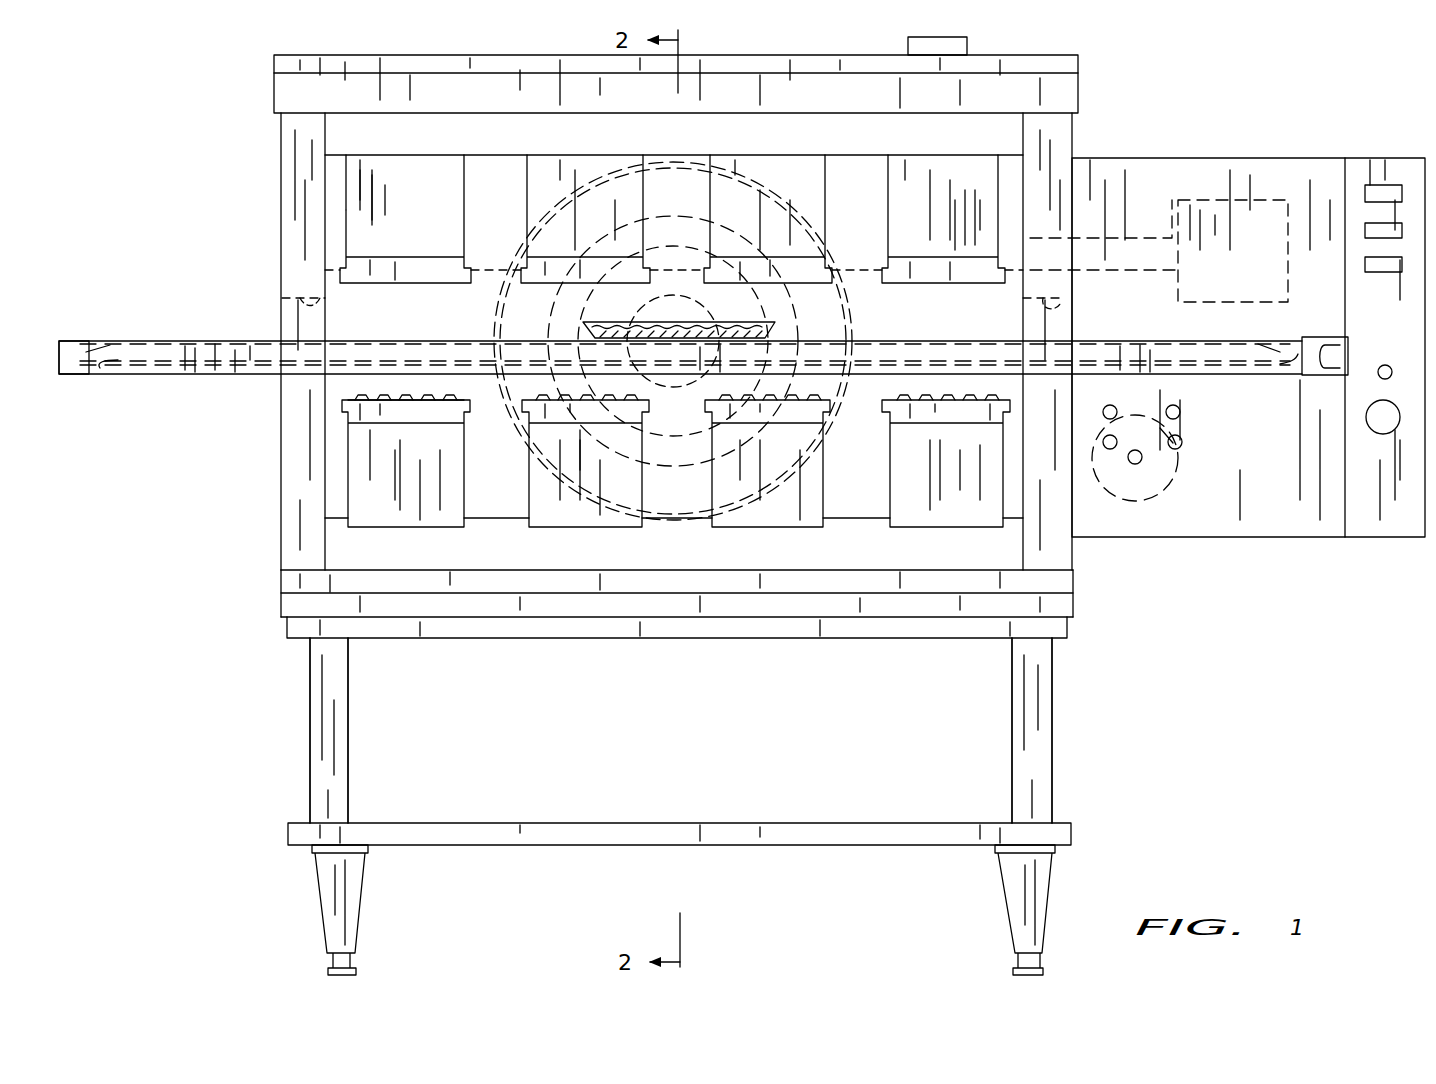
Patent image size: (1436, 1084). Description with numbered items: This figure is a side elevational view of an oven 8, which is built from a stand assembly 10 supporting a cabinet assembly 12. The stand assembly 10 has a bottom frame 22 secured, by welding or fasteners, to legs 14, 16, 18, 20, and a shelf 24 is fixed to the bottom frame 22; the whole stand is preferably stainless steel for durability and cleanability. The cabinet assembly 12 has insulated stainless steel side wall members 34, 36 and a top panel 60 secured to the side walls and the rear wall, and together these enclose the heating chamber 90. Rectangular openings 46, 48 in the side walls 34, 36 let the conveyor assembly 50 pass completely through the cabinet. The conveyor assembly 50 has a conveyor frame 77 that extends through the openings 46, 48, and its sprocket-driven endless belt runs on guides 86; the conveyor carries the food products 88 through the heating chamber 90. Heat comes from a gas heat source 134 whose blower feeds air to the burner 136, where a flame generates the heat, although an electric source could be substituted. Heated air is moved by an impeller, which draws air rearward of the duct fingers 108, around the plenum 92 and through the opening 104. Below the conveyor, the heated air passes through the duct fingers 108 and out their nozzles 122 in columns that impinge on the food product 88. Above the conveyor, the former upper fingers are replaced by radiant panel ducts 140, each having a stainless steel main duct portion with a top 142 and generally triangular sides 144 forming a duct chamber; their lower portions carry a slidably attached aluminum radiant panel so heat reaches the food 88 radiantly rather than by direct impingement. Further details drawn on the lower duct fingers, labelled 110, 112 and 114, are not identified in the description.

The oven 8 is at (175, 674).
The stand assembly 10 is at (1100, 655).
The cabinet assembly 12 is at (275, 170).
The leg 14 is at (341, 738).
The leg 16 is at (329, 730).
The leg 18 is at (1014, 740).
The leg 20 is at (1032, 730).
The bottom frame 22 is at (1074, 832).
The shelf 24 is at (625, 843).
The side wall member 34 is at (297, 207).
The side wall member 36 is at (1072, 130).
The rectangular opening 46 is at (282, 300).
The rectangular opening 48 is at (1048, 312).
The conveyor assembly 50 is at (183, 385).
The top panel 60 is at (360, 90).
The conveyor frame 77 is at (72, 340).
The guides 86 is at (120, 340).
The food products 88 is at (738, 315).
The heating chamber 90 is at (655, 140).
The plenum 92 is at (852, 172).
The opening 104 is at (725, 215).
The duct fingers 108 is at (524, 498).
The lower heater housing top 110 is at (345, 395).
The lower heating elements 112 is at (348, 465).
The lower heater terminal 114 is at (754, 530).
The nozzles 122 is at (408, 398).
The heat source 134 is at (1192, 138).
The burner 136 is at (1232, 200).
The radiant panel ducts 140 is at (445, 153).
The top 142 is at (405, 180).
The generally triangular sides 144 is at (470, 212).